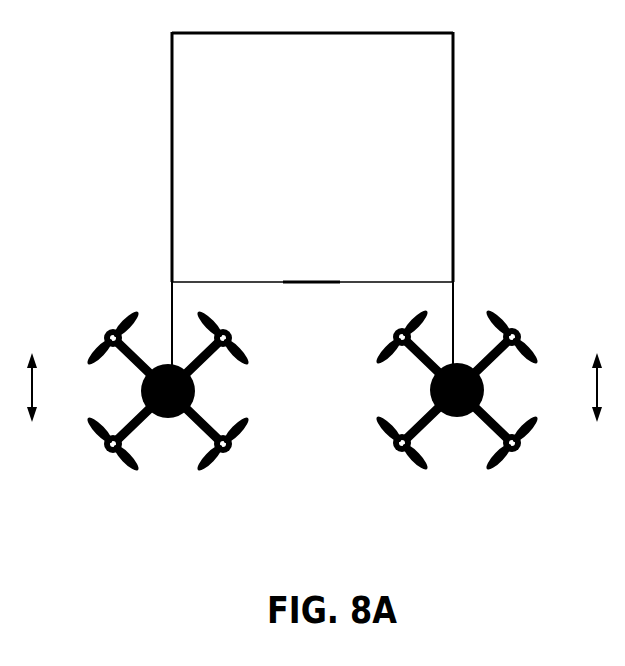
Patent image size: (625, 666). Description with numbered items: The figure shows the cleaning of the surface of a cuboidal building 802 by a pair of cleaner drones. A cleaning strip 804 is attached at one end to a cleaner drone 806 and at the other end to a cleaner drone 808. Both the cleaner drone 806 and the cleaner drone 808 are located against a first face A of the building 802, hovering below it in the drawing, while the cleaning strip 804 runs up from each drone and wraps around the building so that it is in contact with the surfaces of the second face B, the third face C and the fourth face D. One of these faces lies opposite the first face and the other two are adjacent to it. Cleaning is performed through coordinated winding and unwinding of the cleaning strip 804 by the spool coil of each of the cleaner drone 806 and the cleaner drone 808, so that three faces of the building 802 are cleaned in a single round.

The cuboidal building 802 is at (377, 169).
The cleaning strip 804 is at (455, 296).
The cleaner drone 806 is at (169, 418).
The cleaner drone 808 is at (456, 417).